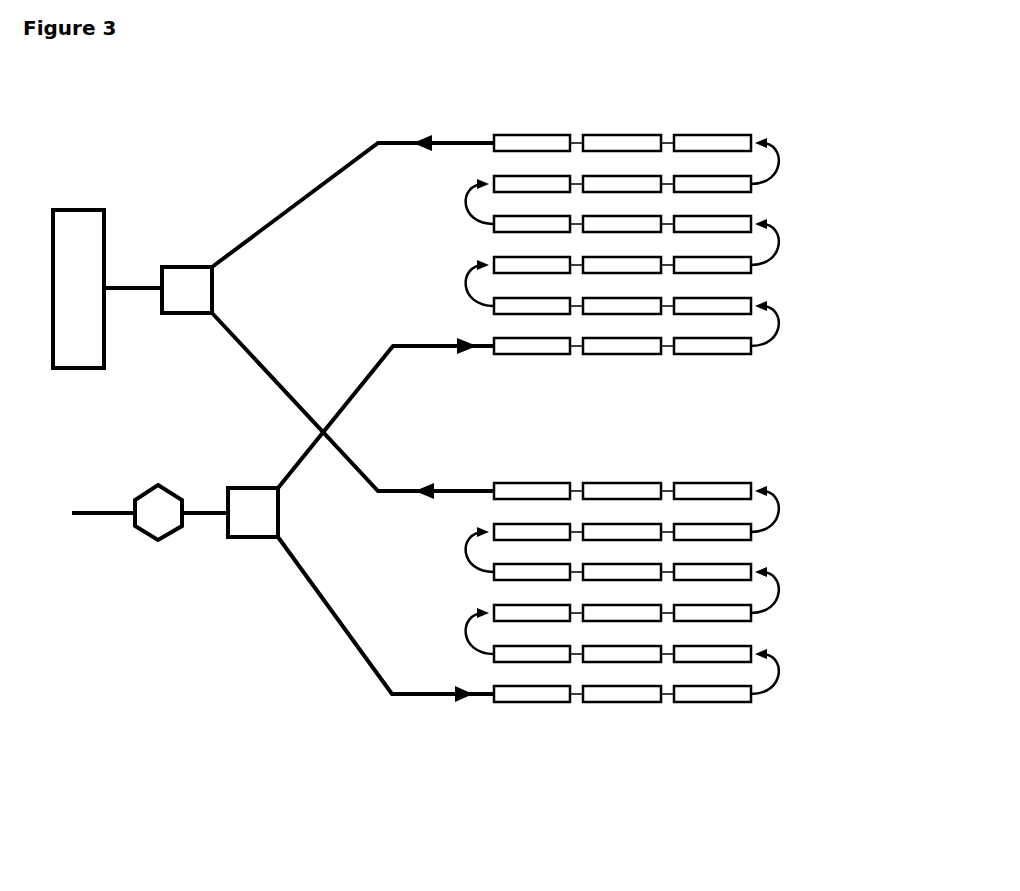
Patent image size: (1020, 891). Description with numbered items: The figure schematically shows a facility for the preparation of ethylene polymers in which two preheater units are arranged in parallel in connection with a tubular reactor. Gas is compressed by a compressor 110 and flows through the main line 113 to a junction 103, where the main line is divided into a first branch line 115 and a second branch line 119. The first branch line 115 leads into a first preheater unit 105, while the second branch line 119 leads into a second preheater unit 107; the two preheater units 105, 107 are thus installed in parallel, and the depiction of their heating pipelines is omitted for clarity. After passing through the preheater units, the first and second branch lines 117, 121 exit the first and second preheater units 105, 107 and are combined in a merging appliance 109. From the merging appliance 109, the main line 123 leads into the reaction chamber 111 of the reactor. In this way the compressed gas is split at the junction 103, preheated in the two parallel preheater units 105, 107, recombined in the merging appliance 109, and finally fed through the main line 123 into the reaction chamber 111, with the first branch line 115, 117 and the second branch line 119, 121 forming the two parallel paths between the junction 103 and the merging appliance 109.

The junction 103 is at (243, 512).
The first preheater unit 105 is at (732, 605).
The second preheater unit 107 is at (727, 233).
The merging appliance 109 is at (178, 283).
The compressor 110 is at (152, 515).
The reaction chamber 111 is at (77, 340).
The main line 113 is at (105, 515).
The first branch line 115 is at (360, 652).
The first branch line 117 is at (350, 461).
The second branch line 119 is at (373, 368).
The second branch line 121 is at (335, 171).
The main line 123 is at (125, 287).